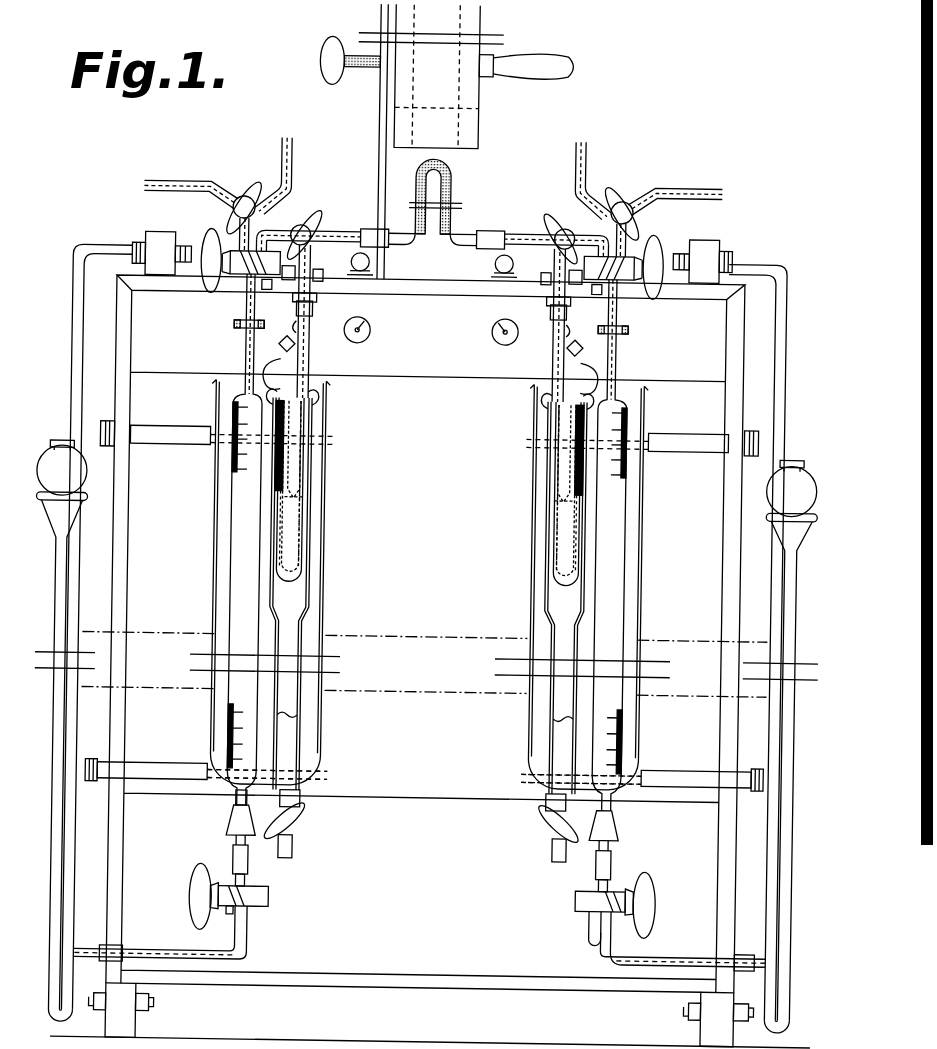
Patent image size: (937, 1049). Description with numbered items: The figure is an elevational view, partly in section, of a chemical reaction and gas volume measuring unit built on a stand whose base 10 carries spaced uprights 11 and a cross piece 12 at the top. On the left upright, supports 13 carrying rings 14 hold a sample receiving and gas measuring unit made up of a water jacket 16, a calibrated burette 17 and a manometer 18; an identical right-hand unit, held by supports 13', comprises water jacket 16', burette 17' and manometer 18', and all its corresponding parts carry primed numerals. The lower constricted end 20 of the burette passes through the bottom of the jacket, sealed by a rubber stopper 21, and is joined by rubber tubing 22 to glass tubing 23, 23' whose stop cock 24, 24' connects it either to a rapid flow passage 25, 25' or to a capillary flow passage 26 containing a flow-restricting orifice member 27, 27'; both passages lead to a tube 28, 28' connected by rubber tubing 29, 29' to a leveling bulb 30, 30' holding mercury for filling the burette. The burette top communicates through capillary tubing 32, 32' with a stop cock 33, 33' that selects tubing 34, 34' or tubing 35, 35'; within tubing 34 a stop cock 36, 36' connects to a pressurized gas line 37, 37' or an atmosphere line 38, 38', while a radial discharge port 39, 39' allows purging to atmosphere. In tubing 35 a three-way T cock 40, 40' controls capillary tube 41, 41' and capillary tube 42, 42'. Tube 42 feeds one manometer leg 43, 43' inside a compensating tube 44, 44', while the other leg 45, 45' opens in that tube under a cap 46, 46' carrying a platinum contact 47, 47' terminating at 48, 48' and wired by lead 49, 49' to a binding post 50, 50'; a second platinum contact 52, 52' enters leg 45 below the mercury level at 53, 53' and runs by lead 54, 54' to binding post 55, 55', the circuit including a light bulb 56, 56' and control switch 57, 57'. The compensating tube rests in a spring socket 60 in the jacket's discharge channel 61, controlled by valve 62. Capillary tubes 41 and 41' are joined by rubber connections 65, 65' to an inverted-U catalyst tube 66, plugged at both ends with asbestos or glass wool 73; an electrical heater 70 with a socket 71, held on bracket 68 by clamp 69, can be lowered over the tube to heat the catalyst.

The base 10 is at (431, 970).
The upright 11 is at (135, 589).
The cross piece 12 is at (433, 282).
The supports 13 is at (209, 603).
The supports 13' is at (645, 609).
The rings 14 is at (330, 772).
The water jacket 16 is at (288, 583).
The water jacket 16' is at (586, 588).
The calibrated burette 17 is at (219, 542).
The calibrated burette 17' is at (636, 549).
The manometer 18 is at (314, 593).
The manometer 18' is at (532, 598).
The lower constricted end 20 is at (244, 797).
The rubber stopper 21 is at (236, 826).
The rubber tubing 22 is at (241, 853).
The glass tubing 23 is at (263, 875).
The glass tubing 23' is at (580, 882).
The stop cock 24 is at (261, 897).
The stop cock 24' is at (575, 900).
The rapid flow passage 25 is at (268, 919).
The rapid flow passage 25' is at (570, 928).
The capillary flow passage 26 is at (237, 913).
The orifice member 27 is at (192, 904).
The orifice member 27' is at (642, 912).
The tube 28 is at (170, 948).
The tube 28' is at (666, 942).
The rubber tubing 29 is at (45, 1025).
The rubber tubing 29' is at (792, 1031).
The leveling bulb 30 is at (79, 627).
The leveling bulb 30' is at (772, 643).
The capillary tubing 32 is at (233, 335).
The capillary tubing 32' is at (630, 322).
The stop cock 33 is at (206, 263).
The stop cock 33' is at (658, 261).
The tubing 34 is at (260, 298).
The tubing 34' is at (652, 300).
The tubing 35 is at (299, 215).
The tubing 35' is at (574, 225).
The stop cock 36 is at (244, 202).
The stop cock 36' is at (628, 205).
The line 37 is at (191, 178).
The line 37' is at (677, 185).
The line 38 is at (294, 174).
The line 38' is at (602, 179).
The radial discharge port 39 is at (265, 269).
The radial discharge port 39' is at (600, 252).
The three-way T cock 40 is at (316, 214).
The three-way T cock 40' is at (557, 220).
The capillary tube 41 is at (308, 224).
The capillary tube 41' is at (556, 231).
The capillary tube 42 is at (320, 318).
The capillary tube 42' is at (535, 325).
The manometer leg 43 is at (325, 487).
The manometer leg 43' is at (528, 490).
The compensating tube 44 is at (318, 490).
The compensating tube 44' is at (567, 494).
The manometer leg 45 is at (323, 450).
The manometer leg 45' is at (527, 456).
The cap 46 is at (321, 364).
The cap 46' is at (538, 361).
The platinum contact 47 is at (263, 369).
The platinum contact 47' is at (588, 374).
The contact terminal 48 is at (319, 446).
The contact terminal 48' is at (536, 449).
The lead 49 is at (275, 319).
The lead 49' is at (585, 324).
The binding post 50 is at (318, 284).
The binding post 50' is at (577, 288).
The platinum contact 52 is at (317, 399).
The platinum contact 52' is at (543, 406).
The contact entry point 53 is at (321, 494).
The contact entry point 53' is at (529, 519).
The lead 54 is at (322, 318).
The lead 54' is at (536, 315).
The binding post 55 is at (332, 266).
The binding post 55' is at (532, 264).
The electric light bulb 56 is at (382, 260).
The electric light bulb 56' is at (487, 264).
The control switch 57 is at (374, 330).
The control switch 57' is at (479, 337).
The spring socket 60 is at (309, 792).
The discharge channel 61 is at (312, 815).
The valve 62 is at (302, 840).
The rubber connection 65 is at (392, 226).
The rubber connection 65' is at (474, 221).
The catalyst tube 66 is at (450, 170).
The bracket 68 is at (377, 103).
The clamp 69 is at (318, 50).
The electrical heater 70 is at (476, 16).
The socket 71 is at (476, 103).
The plugs 73 is at (450, 228).